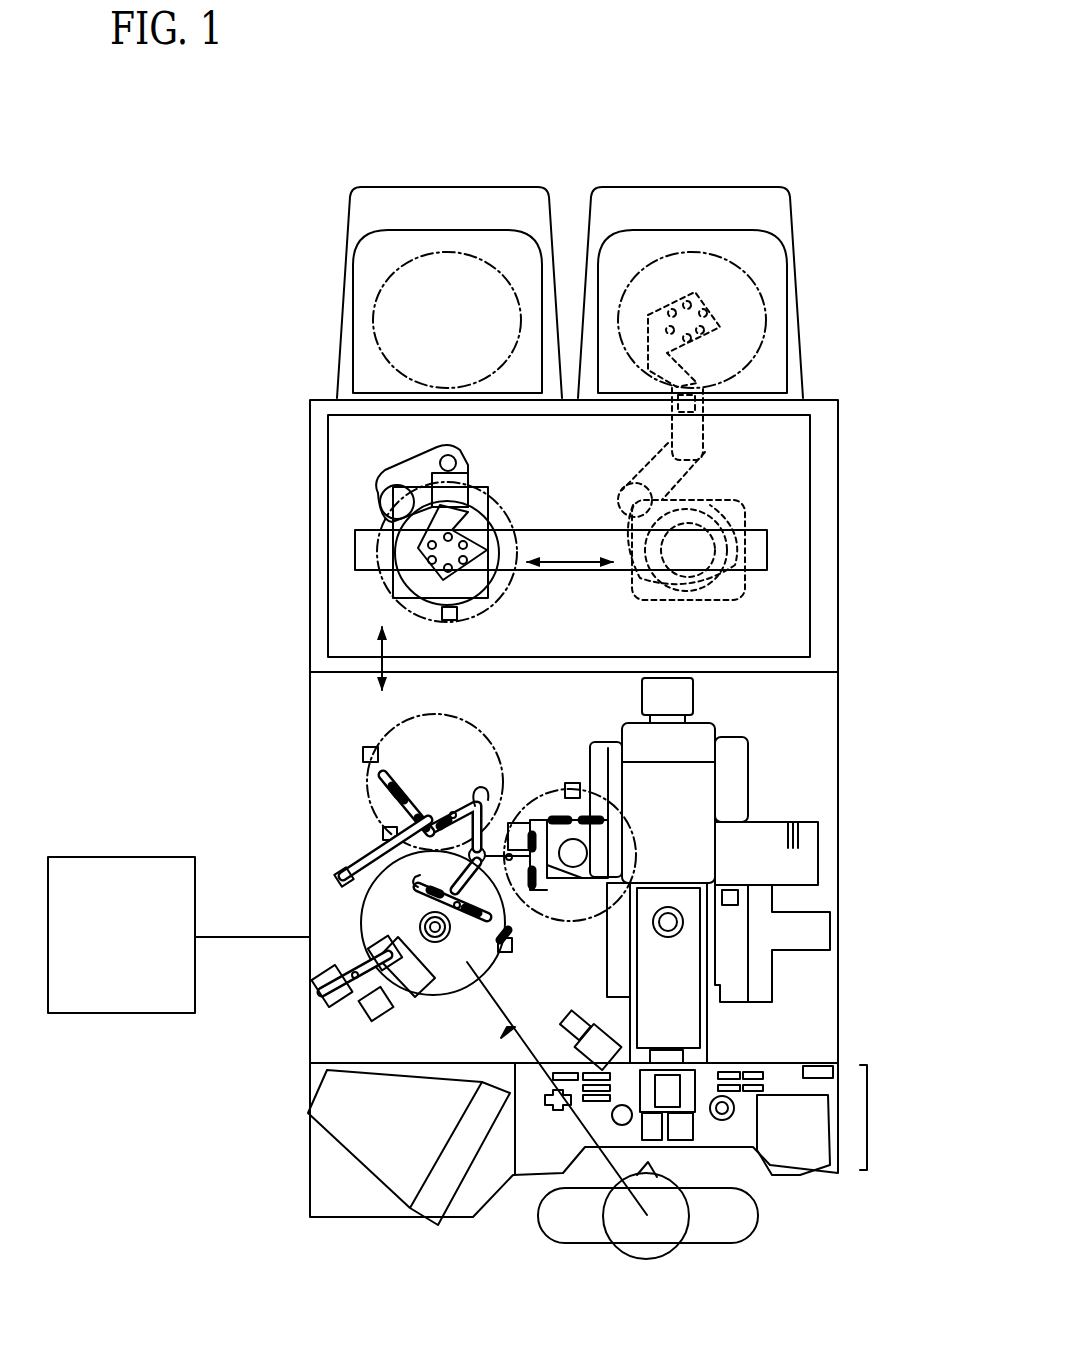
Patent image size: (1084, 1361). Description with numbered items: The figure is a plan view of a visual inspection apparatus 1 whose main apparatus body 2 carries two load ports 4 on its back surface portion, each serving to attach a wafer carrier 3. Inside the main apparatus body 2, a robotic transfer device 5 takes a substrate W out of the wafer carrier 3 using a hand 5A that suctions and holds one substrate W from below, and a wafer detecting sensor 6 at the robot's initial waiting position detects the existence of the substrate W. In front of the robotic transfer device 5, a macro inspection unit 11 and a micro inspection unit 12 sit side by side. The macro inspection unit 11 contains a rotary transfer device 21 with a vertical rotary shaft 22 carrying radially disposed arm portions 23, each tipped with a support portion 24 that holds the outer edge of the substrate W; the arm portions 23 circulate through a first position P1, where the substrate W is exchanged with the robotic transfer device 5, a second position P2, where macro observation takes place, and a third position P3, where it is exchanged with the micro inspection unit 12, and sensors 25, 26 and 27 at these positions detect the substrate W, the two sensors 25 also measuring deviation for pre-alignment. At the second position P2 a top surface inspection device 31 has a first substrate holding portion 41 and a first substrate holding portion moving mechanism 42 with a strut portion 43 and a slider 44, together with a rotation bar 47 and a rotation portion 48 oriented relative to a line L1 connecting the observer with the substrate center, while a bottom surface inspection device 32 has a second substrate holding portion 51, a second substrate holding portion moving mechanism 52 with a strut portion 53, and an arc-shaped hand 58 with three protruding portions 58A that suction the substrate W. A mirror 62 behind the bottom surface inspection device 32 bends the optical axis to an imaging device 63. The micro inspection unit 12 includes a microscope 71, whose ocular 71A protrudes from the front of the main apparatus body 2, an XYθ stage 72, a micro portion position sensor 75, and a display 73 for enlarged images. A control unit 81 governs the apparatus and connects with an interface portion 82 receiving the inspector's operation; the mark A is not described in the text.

The visual inspection apparatus 1 is at (835, 162).
The main apparatus body 2 is at (310, 540).
The wafer carrier 3 is at (487, 232).
The load port 4 is at (345, 300).
The substrate W is at (433, 252).
The robotic transfer device 5 is at (400, 468).
The hand 5A is at (477, 528).
The wafer detecting sensor 6 is at (458, 614).
The micro inspection unit 12 is at (787, 720).
The rotary transfer device 21 is at (460, 760).
The rotary shaft 22 is at (467, 783).
The arm portions 23 is at (372, 790).
The support portion 24 is at (383, 833).
The sensors 25 is at (366, 745).
The sensor 26 is at (513, 945).
The sensor 27 is at (555, 812).
The first position P1 is at (362, 750).
The second position P2 is at (512, 950).
The third position P3 is at (573, 782).
The macro inspection unit 11 is at (330, 830).
The mirror 62 is at (350, 858).
The hand 58 is at (385, 873).
The protruding portions 58A is at (423, 832).
The second substrate holding portion 51 is at (400, 893).
The bottom surface inspection device 32 is at (343, 912).
The rotation portion 48 is at (420, 928).
The rotation bar 47 is at (437, 968).
The slider 44 is at (408, 998).
The strut portion 53 is at (318, 985).
The second substrate holding portion moving mechanism 52 is at (230, 1006).
The first substrate holding portion 41 is at (343, 1008).
The top surface inspection device 31 is at (335, 1000).
The first substrate holding portion moving mechanism 42 is at (345, 1005).
The strut portion 43 is at (255, 1146).
The microscope 71 is at (717, 817).
The stage 72 is at (583, 880).
The micro portion position sensor 75 is at (738, 898).
The imaging device 63 is at (607, 1027).
The display 73 is at (395, 1168).
The interface portion 82 is at (728, 1120).
The ocular 71A is at (700, 1140).
The line L1 is at (608, 1170).
The reference mark A is at (546, 1102).
The control unit 81 is at (118, 857).